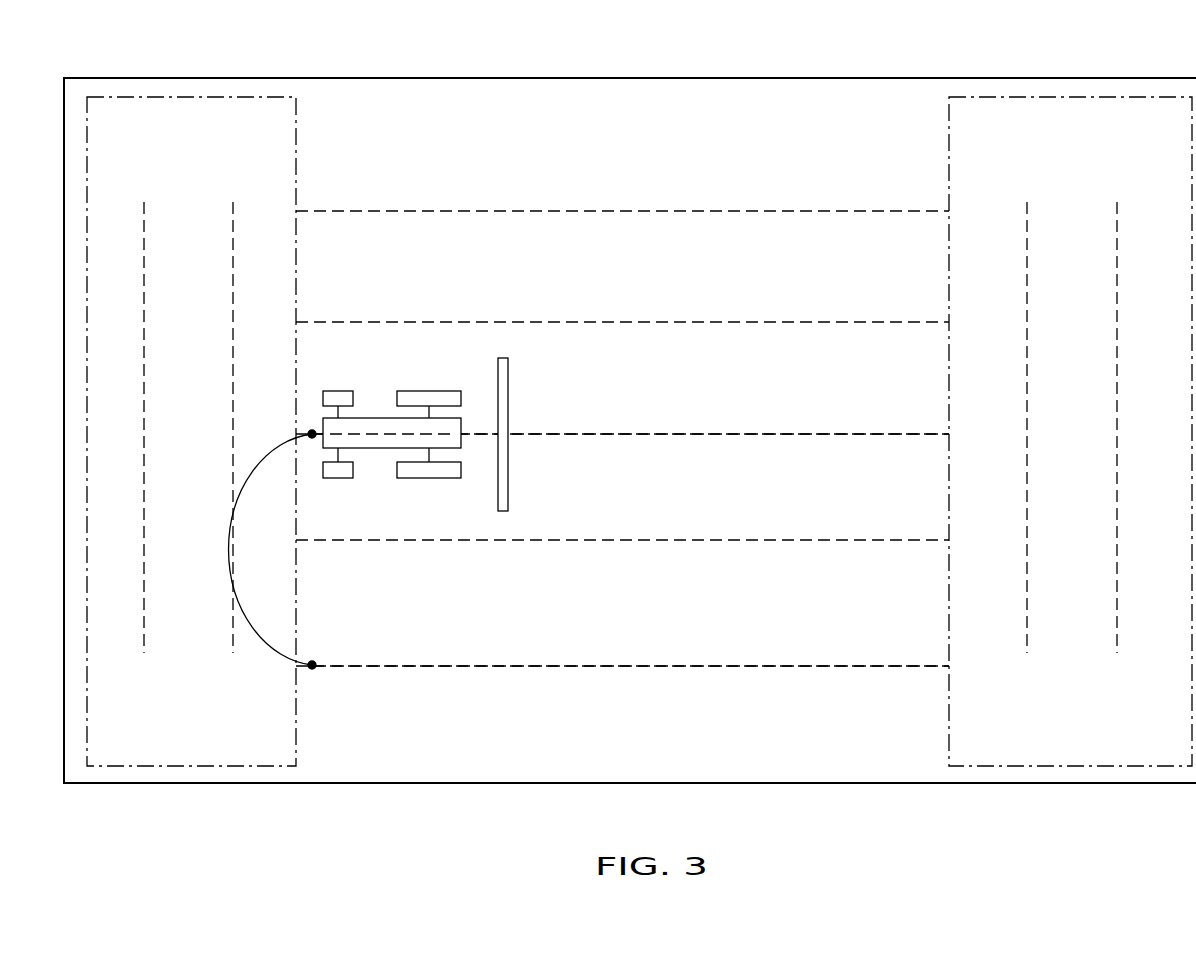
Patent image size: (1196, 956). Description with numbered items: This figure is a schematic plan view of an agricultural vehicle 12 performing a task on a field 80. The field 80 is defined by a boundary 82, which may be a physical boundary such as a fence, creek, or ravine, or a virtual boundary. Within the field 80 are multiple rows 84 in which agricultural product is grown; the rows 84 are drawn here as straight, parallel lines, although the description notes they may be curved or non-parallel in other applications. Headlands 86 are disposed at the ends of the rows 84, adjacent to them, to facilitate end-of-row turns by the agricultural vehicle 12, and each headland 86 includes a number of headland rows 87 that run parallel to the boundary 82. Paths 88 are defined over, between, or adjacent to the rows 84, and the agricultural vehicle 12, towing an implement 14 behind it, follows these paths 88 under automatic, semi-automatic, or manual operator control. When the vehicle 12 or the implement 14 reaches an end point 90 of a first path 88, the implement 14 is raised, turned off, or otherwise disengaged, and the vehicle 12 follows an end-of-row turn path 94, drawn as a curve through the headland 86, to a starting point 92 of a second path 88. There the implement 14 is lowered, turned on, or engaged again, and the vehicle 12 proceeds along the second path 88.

The agricultural vehicle 12 is at (382, 418).
The implement 14 is at (508, 396).
The field 80 is at (278, 45).
The boundary 82 is at (350, 78).
The rows 84 is at (780, 211).
The headlands 86 is at (296, 142).
The headland rows 87 is at (145, 262).
The paths 88 is at (600, 434).
The end point 90 is at (311, 431).
The starting point 92 is at (311, 668).
The end-of-row turn path 94 is at (220, 550).